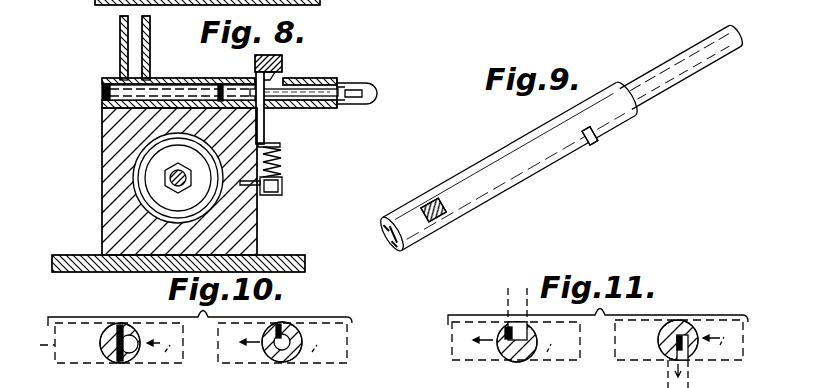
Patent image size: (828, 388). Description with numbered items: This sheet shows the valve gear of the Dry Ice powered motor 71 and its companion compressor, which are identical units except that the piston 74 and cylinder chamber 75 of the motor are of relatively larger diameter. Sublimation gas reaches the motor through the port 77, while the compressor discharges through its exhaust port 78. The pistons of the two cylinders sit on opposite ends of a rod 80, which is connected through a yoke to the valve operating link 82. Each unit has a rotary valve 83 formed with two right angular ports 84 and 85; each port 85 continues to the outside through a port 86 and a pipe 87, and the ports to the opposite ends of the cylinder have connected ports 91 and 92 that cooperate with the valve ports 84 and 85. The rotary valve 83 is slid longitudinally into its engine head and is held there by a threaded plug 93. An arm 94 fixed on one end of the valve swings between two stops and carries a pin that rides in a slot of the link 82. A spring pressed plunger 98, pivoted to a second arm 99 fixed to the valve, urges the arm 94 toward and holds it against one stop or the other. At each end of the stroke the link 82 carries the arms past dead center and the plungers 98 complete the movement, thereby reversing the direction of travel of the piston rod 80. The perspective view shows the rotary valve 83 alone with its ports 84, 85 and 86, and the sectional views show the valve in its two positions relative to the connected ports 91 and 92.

In FIG. 8, the motor 71 is at (318, 3).
In FIG. 8, the piston 74 is at (137, 170).
In FIG. 8, the cylinder chamber 75 is at (150, 215).
In FIG. 8, the port 77 is at (122, 48).
In FIG. 11, the port 77 is at (520, 313).
In FIG. 11, the exhaust port 78 is at (728, 378).
In FIG. 8, the rod 80 is at (170, 180).
In FIG. 8, the valve operating link 82 is at (281, 56).
In FIG. 8, the rotary valve 83 is at (178, 93).
In FIG. 9, the rotary valve 83 is at (498, 157).
In FIG. 10, the rotary valve 83 is at (103, 350).
In FIG. 11, the rotary valve 83 is at (522, 360).
In FIG. 8, the port 84 is at (120, 111).
In FIG. 9, the port 84 is at (442, 197).
In FIG. 11, the port 84 is at (507, 337).
In FIG. 8, the port 85 is at (221, 100).
In FIG. 9, the port 85 is at (586, 134).
In FIG. 10, the port 85 is at (120, 335).
In FIG. 8, the port 86 is at (288, 79).
In FIG. 9, the port 86 is at (668, 72).
In FIG. 10, the port 86 is at (131, 337).
In FIG. 8, the pipe 87 is at (353, 84).
In FIG. 10, the connected port 91 is at (230, 352).
In FIG. 11, the connected port 91 is at (475, 356).
In FIG. 10, the connected port 92 is at (158, 351).
In FIG. 11, the connected port 92 is at (547, 353).
In FIG. 8, the threaded plug 93 is at (103, 97).
In FIG. 8, the arm 94 is at (284, 107).
In FIG. 8, the spring pressed plunger 98 is at (283, 160).
In FIG. 8, the arm 99 is at (266, 122).